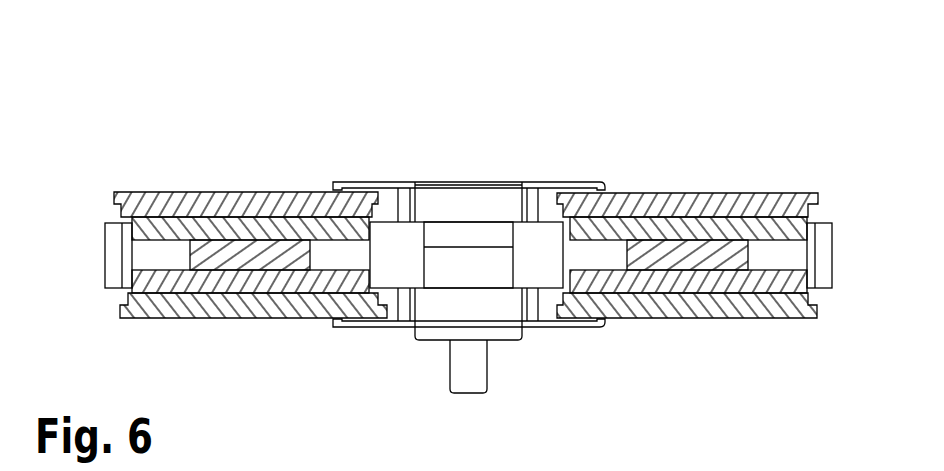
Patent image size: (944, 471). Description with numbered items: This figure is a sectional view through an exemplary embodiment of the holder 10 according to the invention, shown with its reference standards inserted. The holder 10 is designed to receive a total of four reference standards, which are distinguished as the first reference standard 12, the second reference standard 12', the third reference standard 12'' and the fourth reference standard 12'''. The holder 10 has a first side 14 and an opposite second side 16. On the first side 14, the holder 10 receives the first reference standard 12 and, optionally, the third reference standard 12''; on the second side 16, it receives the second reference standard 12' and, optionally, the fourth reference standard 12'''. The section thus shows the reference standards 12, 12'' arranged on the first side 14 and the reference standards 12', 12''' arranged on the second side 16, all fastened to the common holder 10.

The holder 10 is at (797, 127).
The first reference standard 12 is at (246, 161).
The second reference standard 12' is at (253, 350).
The third reference standard 12'' is at (687, 161).
The fourth reference standard 12''' is at (687, 350).
The first side 14 is at (494, 168).
The second side 16 is at (540, 353).